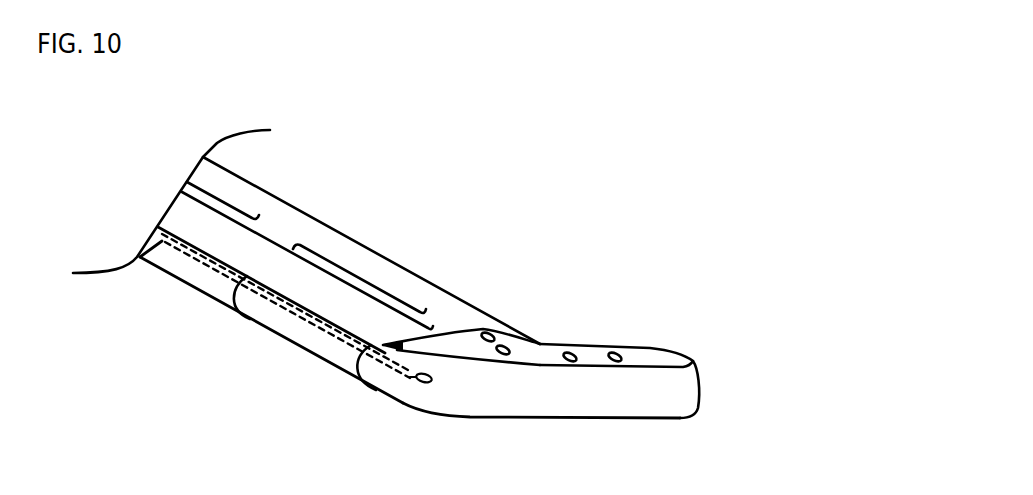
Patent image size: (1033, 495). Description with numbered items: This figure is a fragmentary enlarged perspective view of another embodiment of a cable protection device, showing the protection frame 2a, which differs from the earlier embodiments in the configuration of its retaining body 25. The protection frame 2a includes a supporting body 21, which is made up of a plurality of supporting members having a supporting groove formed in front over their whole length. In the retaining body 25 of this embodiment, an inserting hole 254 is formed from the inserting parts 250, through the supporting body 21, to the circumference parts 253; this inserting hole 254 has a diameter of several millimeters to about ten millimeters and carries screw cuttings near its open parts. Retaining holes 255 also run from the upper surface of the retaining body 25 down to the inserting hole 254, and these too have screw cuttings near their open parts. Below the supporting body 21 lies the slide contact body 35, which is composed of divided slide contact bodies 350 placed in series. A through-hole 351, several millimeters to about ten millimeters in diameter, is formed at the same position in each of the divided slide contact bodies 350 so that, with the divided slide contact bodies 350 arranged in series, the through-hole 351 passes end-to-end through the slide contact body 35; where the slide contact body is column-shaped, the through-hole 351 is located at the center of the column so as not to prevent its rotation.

The protection frame 2a is at (481, 229).
The supporting body 21 is at (276, 238).
The retaining body 25 is at (653, 357).
The slide contact body 35 is at (246, 333).
The divided slide contact bodies 350 is at (225, 362).
The through-hole 351 is at (140, 259).
The inserting parts 250 is at (387, 382).
The circumference parts 253 is at (577, 409).
The inserting hole 254 is at (423, 384).
The retaining holes 255 is at (400, 346).